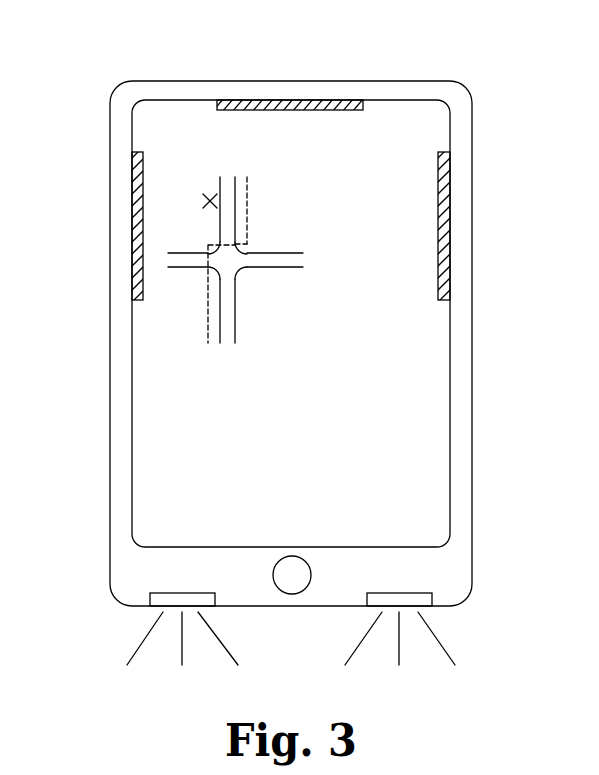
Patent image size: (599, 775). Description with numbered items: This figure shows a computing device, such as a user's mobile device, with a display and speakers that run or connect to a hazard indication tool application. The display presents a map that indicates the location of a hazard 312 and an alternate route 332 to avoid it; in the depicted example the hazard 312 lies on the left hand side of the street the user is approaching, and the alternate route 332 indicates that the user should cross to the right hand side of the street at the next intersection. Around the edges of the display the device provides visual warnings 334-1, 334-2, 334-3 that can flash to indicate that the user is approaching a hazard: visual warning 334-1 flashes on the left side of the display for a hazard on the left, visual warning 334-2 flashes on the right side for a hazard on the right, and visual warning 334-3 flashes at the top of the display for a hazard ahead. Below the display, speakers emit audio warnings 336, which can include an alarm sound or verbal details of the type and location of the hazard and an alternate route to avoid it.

The hazard 312 is at (209, 193).
The alternate route 332 is at (248, 195).
The visual warning 334-1 is at (138, 218).
The visual warning 334-2 is at (442, 222).
The visual warning 334-3 is at (290, 81).
The audio warnings 336 is at (227, 647).